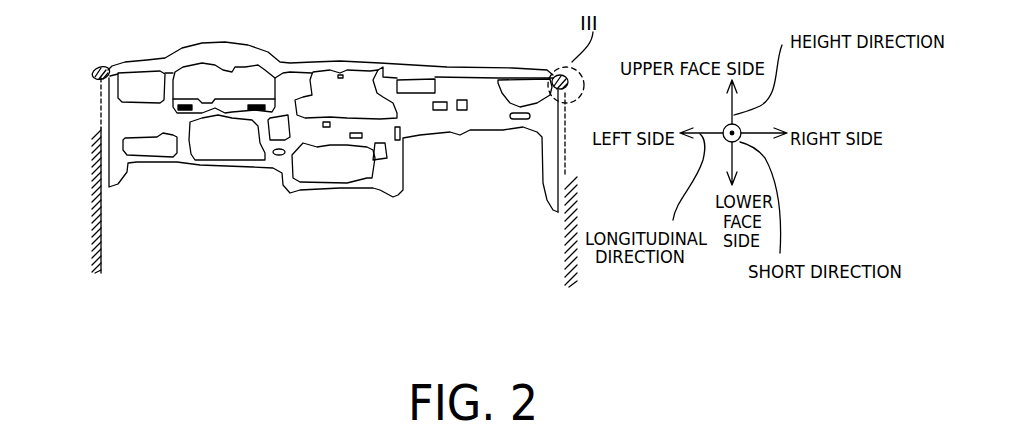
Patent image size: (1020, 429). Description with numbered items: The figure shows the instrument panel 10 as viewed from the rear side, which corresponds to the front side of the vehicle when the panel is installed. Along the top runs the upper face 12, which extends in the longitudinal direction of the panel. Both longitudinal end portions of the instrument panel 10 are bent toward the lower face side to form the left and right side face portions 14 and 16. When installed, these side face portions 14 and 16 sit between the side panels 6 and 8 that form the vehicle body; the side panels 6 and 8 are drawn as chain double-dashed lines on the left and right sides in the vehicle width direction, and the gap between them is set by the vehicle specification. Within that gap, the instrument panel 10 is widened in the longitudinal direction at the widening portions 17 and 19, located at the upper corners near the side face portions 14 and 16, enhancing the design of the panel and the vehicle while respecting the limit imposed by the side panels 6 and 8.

The side panel 6 is at (100, 238).
The side panel 8 is at (563, 263).
The instrument panel 10 is at (355, 215).
The upper face 12 is at (432, 63).
The left side face portion 14 is at (99, 129).
The right side face portion 16 is at (558, 149).
The widening portion 17 is at (95, 82).
The widening portion 19 is at (578, 101).